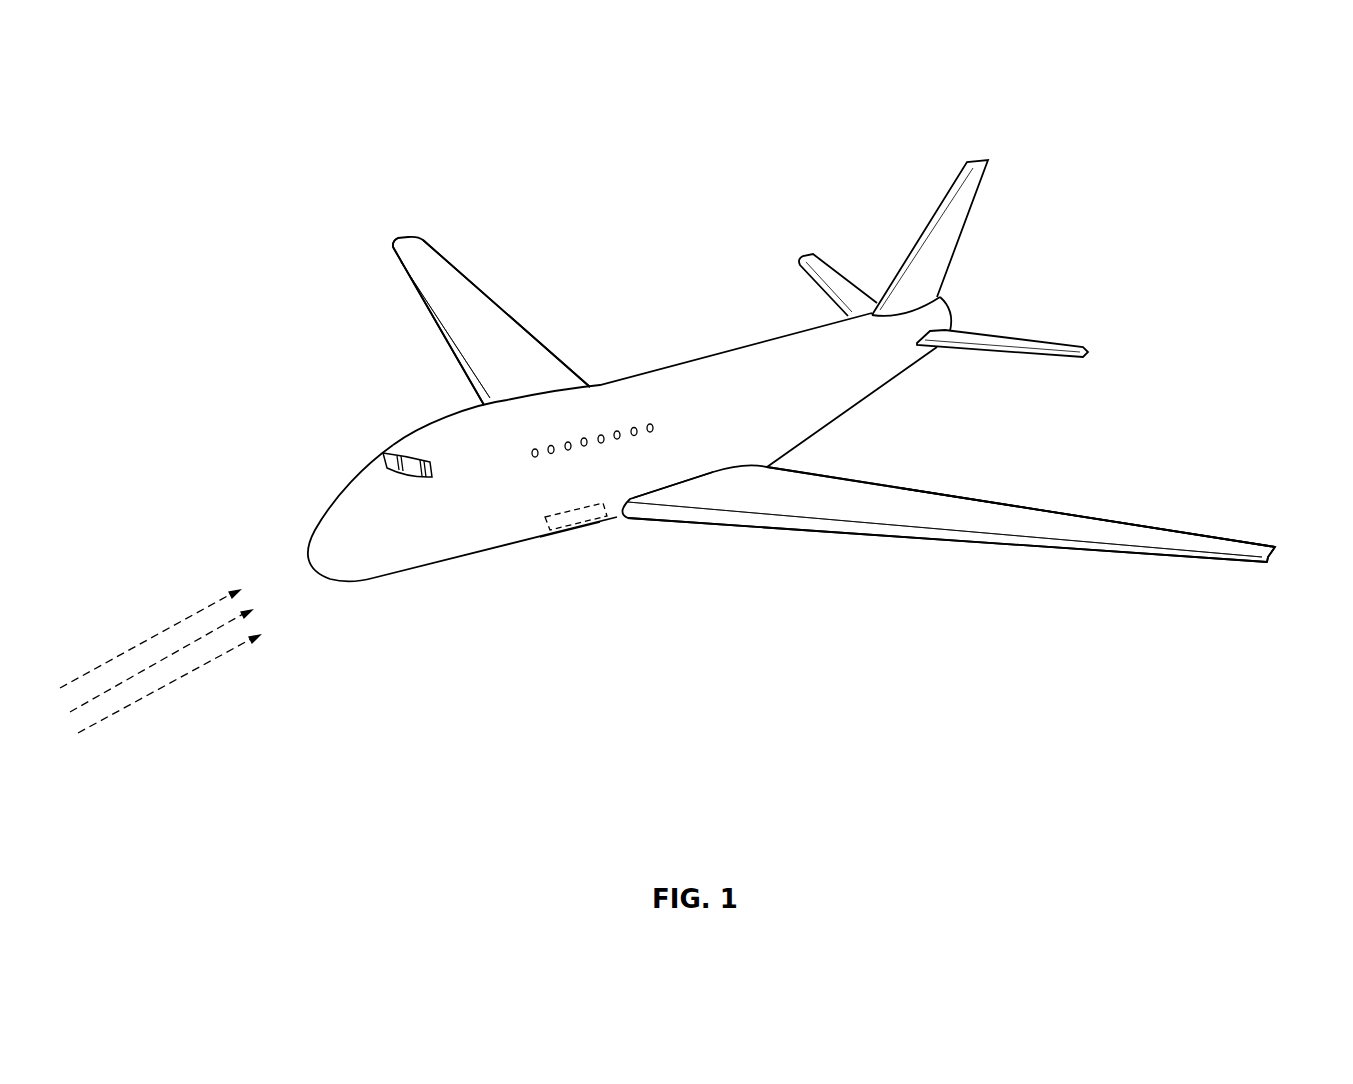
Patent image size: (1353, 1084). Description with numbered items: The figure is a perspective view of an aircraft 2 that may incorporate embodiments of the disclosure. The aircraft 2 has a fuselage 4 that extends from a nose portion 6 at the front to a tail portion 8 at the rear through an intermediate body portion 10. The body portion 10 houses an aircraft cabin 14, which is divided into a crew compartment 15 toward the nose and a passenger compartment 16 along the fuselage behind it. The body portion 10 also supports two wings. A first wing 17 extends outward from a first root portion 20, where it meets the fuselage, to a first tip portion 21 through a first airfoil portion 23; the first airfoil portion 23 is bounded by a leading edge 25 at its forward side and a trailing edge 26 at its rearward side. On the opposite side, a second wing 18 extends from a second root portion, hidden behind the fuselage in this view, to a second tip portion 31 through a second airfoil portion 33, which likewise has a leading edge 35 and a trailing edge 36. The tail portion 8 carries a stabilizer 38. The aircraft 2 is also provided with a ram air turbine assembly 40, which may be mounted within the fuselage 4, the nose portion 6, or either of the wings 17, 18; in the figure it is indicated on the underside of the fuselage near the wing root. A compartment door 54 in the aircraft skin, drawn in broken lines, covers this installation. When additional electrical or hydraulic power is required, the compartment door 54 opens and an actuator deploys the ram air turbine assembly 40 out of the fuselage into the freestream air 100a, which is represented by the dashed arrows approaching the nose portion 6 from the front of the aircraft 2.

The aircraft 2 is at (297, 426).
The fuselage 4 is at (440, 560).
The nose portion 6 is at (310, 553).
The tail portion 8 is at (898, 369).
The body portion 10 is at (800, 435).
The aircraft cabin 14 is at (658, 476).
The crew compartment 15 is at (392, 448).
The passenger compartment 16 is at (655, 383).
The first wing 17 is at (958, 550).
The second wing 18 is at (437, 250).
The first root portion 20 is at (722, 473).
The first tip portion 21 is at (1277, 552).
The first airfoil portion 23 is at (863, 488).
The leading edge 25 is at (793, 525).
The trailing edge 26 is at (990, 500).
The second tip portion 31 is at (403, 238).
The second airfoil portion 33 is at (457, 280).
The leading edge 35 is at (398, 267).
The trailing edge 36 is at (475, 282).
The stabilizer 38 is at (985, 316).
The ram air turbine (RAT) assembly 40 is at (585, 560).
The compartment door 54 is at (596, 528).
The freestream air 100a is at (142, 697).